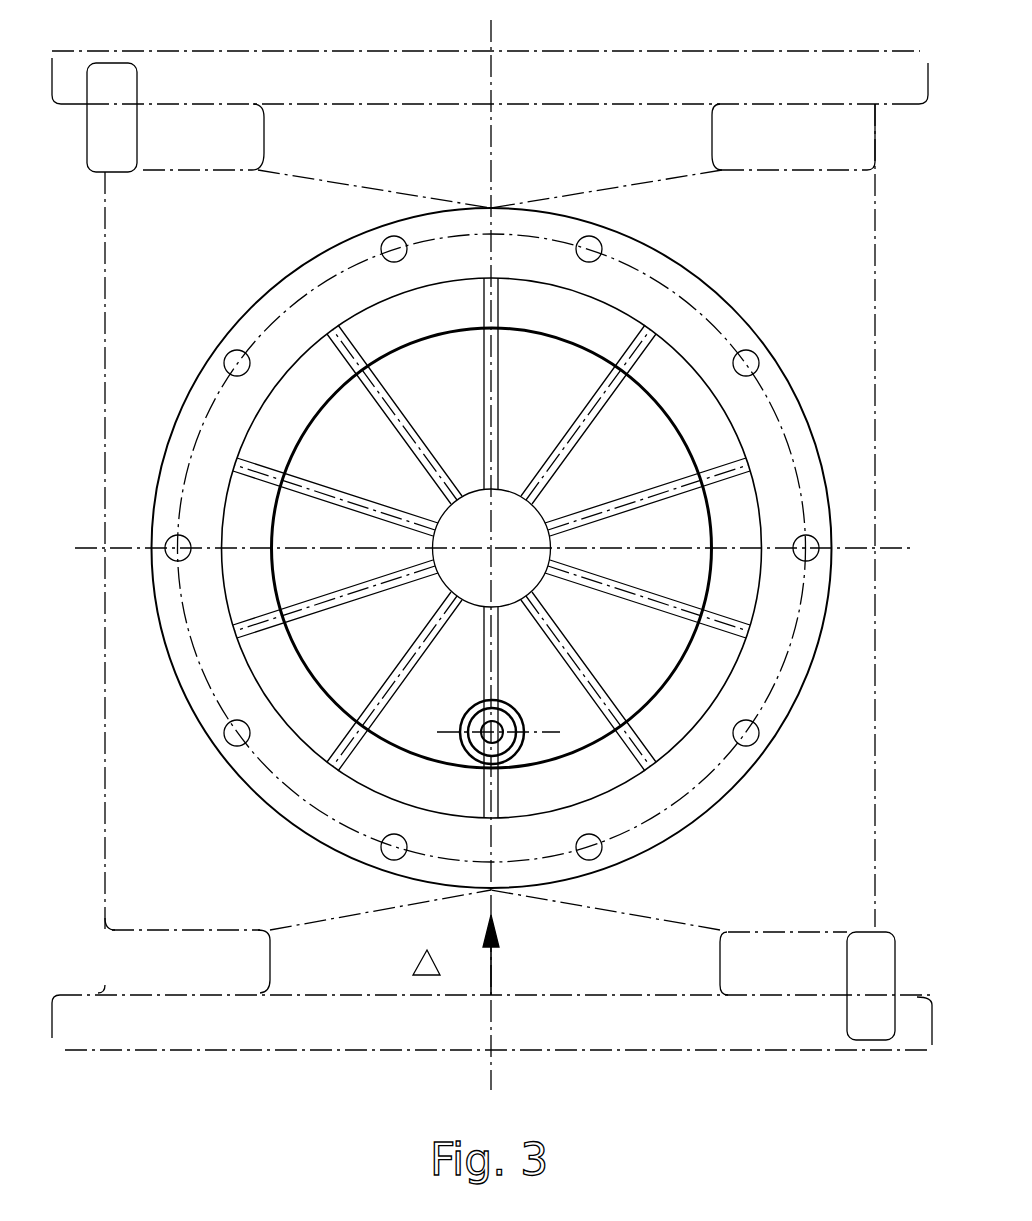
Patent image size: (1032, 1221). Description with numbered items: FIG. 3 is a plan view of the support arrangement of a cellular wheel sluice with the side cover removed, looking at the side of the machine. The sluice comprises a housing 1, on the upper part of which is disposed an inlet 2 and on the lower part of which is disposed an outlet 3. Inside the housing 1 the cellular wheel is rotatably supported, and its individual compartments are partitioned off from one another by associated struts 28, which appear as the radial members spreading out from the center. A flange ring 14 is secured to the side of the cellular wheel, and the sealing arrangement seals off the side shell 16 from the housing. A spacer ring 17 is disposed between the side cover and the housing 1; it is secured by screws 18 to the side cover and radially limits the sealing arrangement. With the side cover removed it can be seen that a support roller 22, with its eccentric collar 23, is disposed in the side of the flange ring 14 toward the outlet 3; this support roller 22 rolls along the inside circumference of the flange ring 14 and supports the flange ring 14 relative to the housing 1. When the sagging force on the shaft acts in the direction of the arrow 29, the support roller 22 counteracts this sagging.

The housing 1 is at (822, 222).
The inlet 2 is at (555, 85).
The outlet 3 is at (385, 1060).
The flange ring 14 is at (292, 400).
The side shell 16 is at (627, 437).
The spacer ring 17 is at (198, 402).
The screws 18 is at (381, 250).
The support roller 22 is at (518, 720).
The eccentric collar 23 is at (497, 730).
The struts 28 is at (597, 392).
The arrow 29 is at (495, 952).